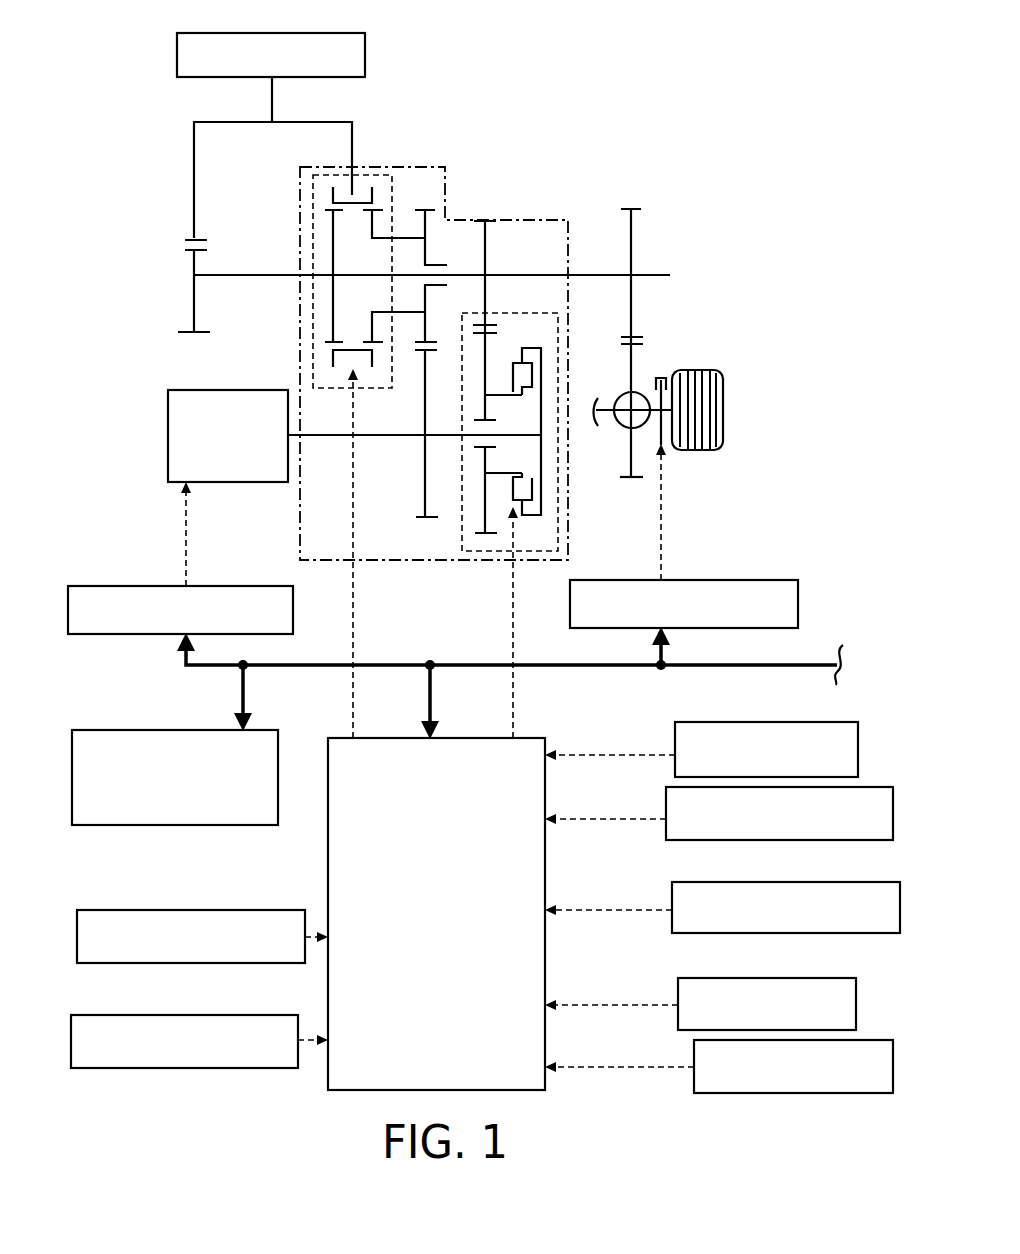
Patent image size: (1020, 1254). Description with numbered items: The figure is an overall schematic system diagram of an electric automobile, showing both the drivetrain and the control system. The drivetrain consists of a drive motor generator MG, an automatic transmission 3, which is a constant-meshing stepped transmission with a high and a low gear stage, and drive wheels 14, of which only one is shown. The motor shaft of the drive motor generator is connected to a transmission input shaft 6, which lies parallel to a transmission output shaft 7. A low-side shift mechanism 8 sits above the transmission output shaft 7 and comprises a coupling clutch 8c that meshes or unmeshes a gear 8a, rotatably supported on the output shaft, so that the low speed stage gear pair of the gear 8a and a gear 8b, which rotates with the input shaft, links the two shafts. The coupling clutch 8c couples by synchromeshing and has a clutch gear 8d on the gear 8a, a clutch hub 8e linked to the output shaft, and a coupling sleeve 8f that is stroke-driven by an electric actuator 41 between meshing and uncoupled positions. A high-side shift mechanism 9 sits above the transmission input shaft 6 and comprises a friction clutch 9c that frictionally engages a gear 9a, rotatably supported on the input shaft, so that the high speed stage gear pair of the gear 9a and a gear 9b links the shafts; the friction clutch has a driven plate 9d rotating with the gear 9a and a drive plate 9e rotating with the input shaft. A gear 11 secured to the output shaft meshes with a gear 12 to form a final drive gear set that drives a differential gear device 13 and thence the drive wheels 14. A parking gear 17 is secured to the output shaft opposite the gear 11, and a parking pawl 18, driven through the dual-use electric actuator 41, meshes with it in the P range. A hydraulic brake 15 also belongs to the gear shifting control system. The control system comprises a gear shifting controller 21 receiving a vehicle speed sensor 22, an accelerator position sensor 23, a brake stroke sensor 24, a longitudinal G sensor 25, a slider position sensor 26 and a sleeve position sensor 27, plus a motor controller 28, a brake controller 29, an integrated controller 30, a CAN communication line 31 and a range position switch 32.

The automatic transmission 3 is at (296, 527).
The transmission input shaft 6 is at (330, 437).
The transmission output shaft 7 is at (660, 273).
The low-side shift mechanism 8 is at (308, 249).
The gear 8a is at (426, 338).
The gear 8b is at (427, 520).
The coupling clutch 8c is at (318, 200).
The clutch gear 8d is at (373, 225).
The clutch hub 8e is at (330, 226).
The coupling sleeve 8f is at (330, 192).
The high-side shift mechanism 9 is at (574, 323).
The gear 9a is at (486, 536).
The gear 9b is at (486, 324).
The friction clutch 9c is at (514, 354).
The driven plate 9d is at (523, 393).
The drive plate 9e is at (523, 350).
The gear 11 is at (632, 209).
The gear 12 is at (631, 478).
The differential gear device 13 is at (616, 424).
The drive wheels 14 is at (707, 368).
The hydraulic brake 15 is at (655, 377).
The parking gear 17 is at (194, 258).
The parking pawl 18 is at (194, 166).
The gear shifting controller 21 is at (546, 738).
The vehicle speed sensor 22 is at (816, 722).
The accelerator position sensor 23 is at (878, 787).
The brake stroke sensor 24 is at (878, 882).
The longitudinal G sensor 25 is at (830, 978).
The slider position sensor 26 is at (154, 910).
The sleeve position sensor 27 is at (154, 1015).
The motor controller 28 is at (130, 586).
The brake controller 29 is at (750, 580).
The integrated controller 30 is at (127, 730).
The controller area network (CAN) communication line 31 is at (806, 663).
The range position switch 32 is at (878, 1040).
The electric actuator 41 is at (366, 45).